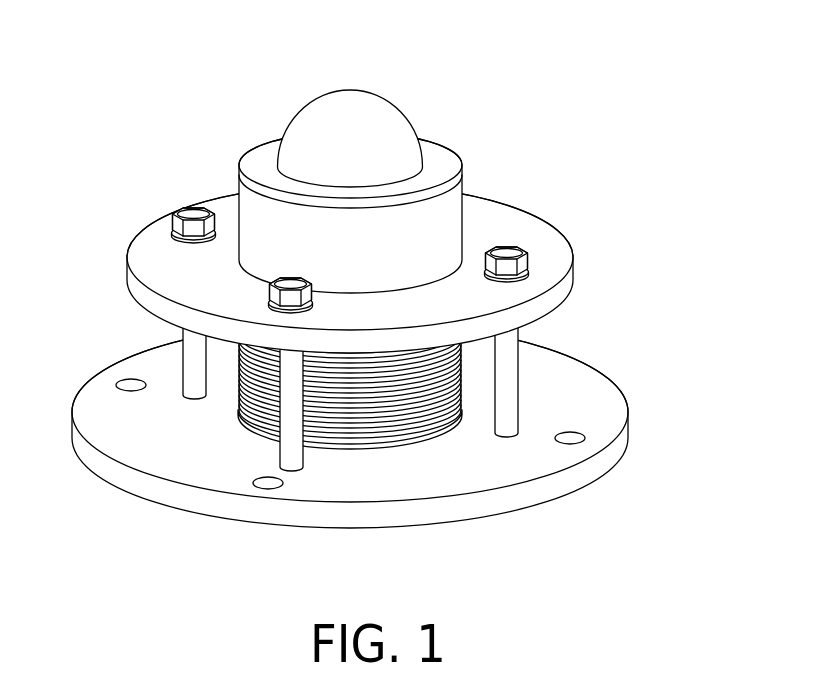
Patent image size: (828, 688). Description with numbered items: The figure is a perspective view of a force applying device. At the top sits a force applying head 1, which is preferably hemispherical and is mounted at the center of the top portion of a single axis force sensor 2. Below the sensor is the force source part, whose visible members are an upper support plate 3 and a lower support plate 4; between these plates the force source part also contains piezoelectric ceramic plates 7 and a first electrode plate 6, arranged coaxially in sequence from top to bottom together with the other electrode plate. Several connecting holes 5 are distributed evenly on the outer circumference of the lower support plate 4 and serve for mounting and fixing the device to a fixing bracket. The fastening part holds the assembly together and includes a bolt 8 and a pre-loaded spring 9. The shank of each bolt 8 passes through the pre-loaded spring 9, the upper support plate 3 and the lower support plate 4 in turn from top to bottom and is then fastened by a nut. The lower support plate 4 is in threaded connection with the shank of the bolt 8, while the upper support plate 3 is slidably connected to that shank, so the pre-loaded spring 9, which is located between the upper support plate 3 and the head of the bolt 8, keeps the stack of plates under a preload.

The force applying head 1 is at (373, 130).
The single axis force sensor 2 is at (430, 228).
The upper support plate 3 is at (553, 258).
The lower support plate 4 is at (590, 410).
The connecting holes 5 is at (578, 442).
The first electrode plate 6 is at (358, 442).
The piezoelectric ceramic plates 7 is at (258, 380).
The bolt 8 is at (195, 365).
The pre-loaded spring 9 is at (175, 227).